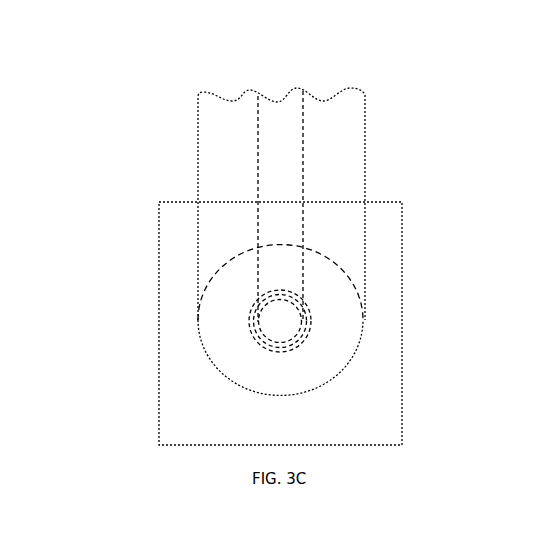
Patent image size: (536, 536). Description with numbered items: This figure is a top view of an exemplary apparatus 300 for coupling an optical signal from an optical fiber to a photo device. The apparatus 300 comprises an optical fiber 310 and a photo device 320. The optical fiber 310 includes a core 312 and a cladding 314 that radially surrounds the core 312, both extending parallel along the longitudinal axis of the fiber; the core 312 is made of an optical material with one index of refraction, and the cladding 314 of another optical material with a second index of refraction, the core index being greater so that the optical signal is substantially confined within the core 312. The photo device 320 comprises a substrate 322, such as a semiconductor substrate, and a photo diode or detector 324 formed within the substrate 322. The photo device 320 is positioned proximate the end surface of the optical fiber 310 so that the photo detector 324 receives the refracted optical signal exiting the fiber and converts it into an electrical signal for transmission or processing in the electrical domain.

The apparatus 300 is at (432, 107).
The optical fiber 310 is at (198, 177).
The core 312 is at (288, 322).
The cladding 314 is at (220, 332).
The photo device 320 is at (392, 202).
The substrate 322 is at (385, 380).
The photo detector 324 is at (263, 346).